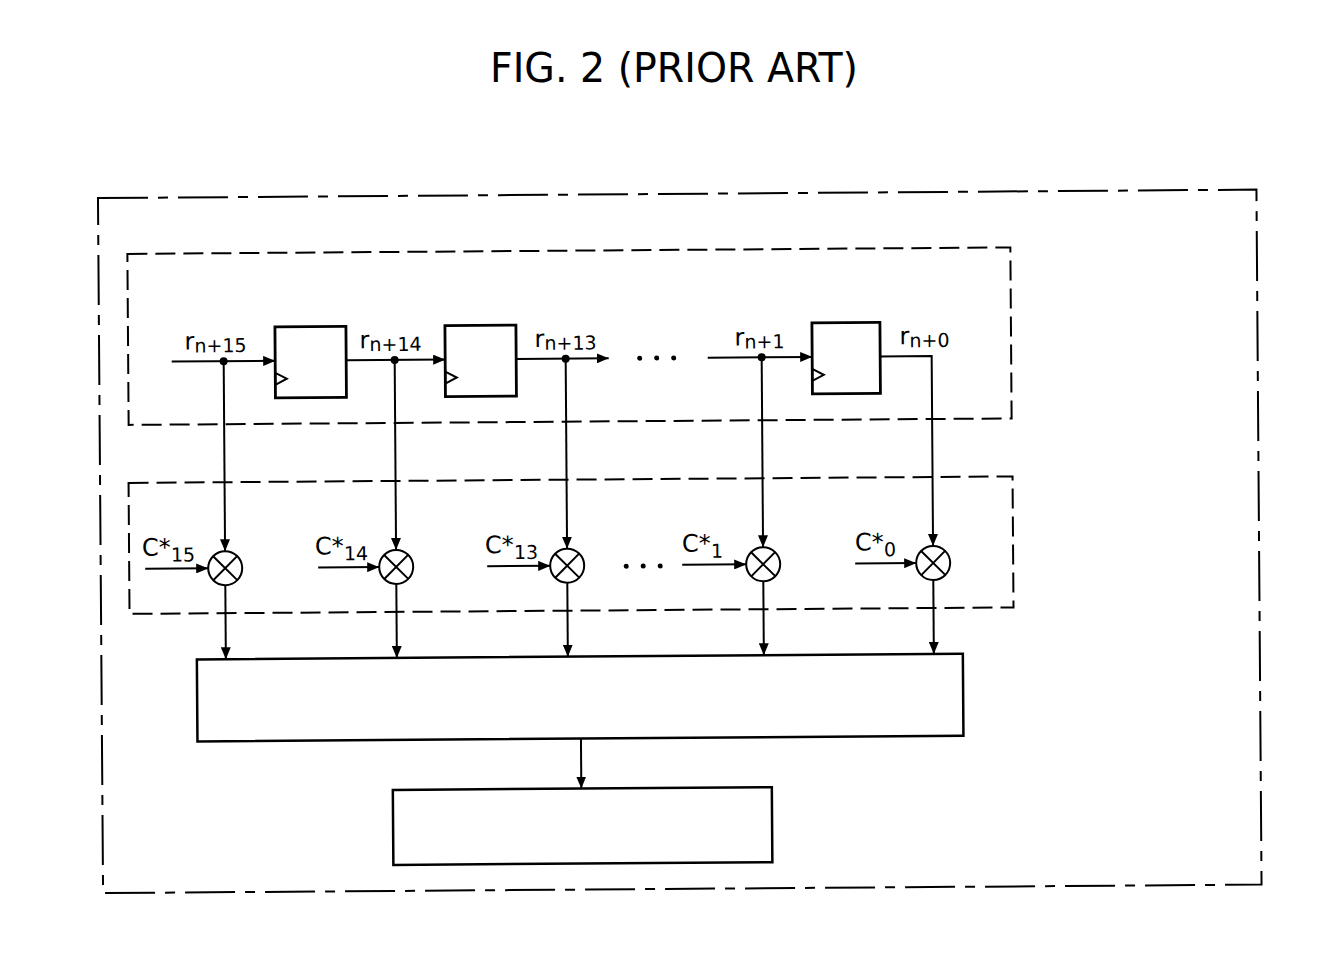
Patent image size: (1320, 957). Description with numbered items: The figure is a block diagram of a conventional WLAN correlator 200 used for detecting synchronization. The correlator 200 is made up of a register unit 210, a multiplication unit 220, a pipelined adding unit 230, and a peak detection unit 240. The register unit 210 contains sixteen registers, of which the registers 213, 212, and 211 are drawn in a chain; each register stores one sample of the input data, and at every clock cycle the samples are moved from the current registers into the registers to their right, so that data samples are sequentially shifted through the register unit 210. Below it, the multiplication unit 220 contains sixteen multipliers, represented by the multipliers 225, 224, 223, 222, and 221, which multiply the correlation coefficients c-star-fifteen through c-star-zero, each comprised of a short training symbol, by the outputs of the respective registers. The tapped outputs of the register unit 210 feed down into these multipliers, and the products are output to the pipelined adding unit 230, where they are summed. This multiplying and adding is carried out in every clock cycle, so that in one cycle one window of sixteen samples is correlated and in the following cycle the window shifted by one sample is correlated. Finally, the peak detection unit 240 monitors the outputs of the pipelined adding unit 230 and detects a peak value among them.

The correlator 200 is at (1091, 194).
The register unit 210 is at (1013, 331).
The register 211 is at (847, 324).
The register 212 is at (480, 324).
The register 213 is at (310, 324).
The multiplication unit 220 is at (1013, 544).
The multiplier 221 is at (949, 559).
The multiplier 222 is at (779, 559).
The multiplier 223 is at (583, 559).
The multiplier 224 is at (412, 559).
The multiplier 225 is at (241, 559).
The pipelined adding unit 230 is at (580, 698).
The peak detection unit 240 is at (583, 826).